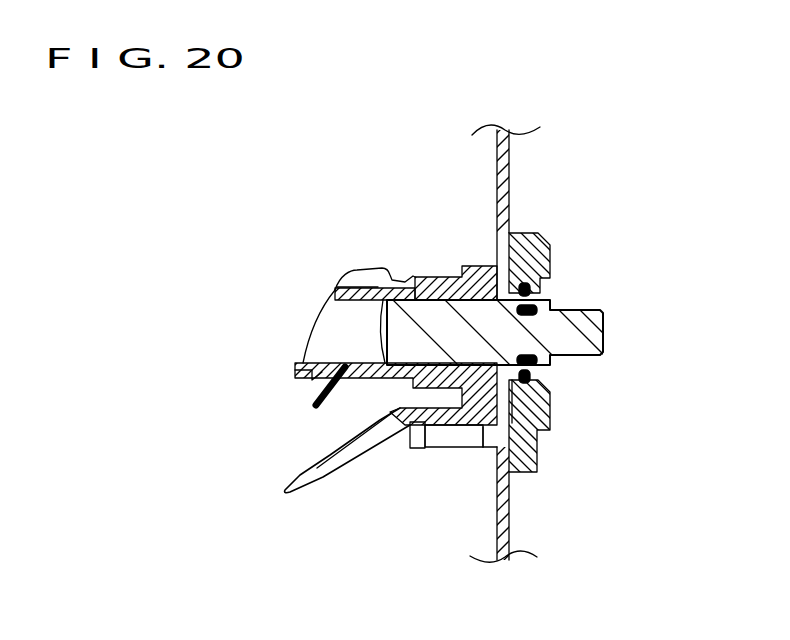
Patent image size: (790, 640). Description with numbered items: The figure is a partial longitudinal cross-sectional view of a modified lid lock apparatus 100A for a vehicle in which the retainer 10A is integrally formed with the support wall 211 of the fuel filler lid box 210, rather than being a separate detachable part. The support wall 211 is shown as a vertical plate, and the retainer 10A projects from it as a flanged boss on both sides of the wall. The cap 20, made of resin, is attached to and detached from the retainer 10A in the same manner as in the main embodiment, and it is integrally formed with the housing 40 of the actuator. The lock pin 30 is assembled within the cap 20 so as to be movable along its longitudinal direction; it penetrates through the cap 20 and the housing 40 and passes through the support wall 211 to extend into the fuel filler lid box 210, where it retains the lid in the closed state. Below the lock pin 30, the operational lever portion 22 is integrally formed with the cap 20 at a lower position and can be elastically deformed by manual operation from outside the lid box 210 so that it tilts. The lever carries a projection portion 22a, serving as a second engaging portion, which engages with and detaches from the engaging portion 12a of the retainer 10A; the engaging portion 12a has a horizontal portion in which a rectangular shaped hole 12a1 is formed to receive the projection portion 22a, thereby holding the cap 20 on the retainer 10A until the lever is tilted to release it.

The retainer 10A is at (553, 246).
The fuel filler lid box 210 is at (493, 163).
The support wall 211 is at (512, 528).
The cap 20 is at (448, 275).
The lock pin 30 is at (606, 330).
The lid lock apparatus for a vehicle 100A is at (331, 292).
The housing 40 is at (308, 395).
The engaging portion 12a is at (413, 428).
The rectangular shaped hole 12a1 is at (457, 441).
The operational lever portion 22 is at (320, 468).
The projection portion 22a is at (422, 450).